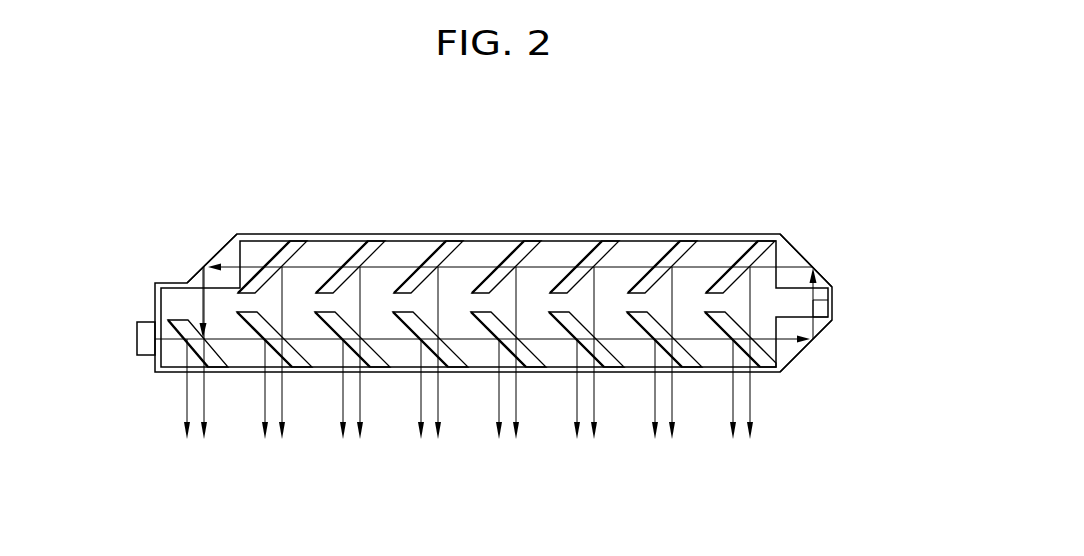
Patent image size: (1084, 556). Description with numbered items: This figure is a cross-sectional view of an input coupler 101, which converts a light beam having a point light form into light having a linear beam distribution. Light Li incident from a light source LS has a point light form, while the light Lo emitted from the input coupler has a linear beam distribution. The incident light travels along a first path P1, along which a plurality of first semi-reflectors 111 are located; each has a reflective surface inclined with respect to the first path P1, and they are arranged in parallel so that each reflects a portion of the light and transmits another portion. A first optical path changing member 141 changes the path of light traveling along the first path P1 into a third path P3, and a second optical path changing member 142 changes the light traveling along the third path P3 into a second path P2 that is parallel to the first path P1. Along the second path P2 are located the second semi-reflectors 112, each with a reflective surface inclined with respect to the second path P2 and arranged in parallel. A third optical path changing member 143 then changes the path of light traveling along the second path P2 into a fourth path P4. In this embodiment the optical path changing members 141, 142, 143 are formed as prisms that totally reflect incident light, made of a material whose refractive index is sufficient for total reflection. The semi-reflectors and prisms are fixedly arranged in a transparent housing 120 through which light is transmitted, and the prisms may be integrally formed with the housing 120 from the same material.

The input coupler 101 is at (797, 150).
The housing 120 is at (412, 236).
The first semi-reflectors 111 is at (527, 358).
The second semi-reflectors 112 is at (595, 253).
The first optical path changing member 141 is at (792, 350).
The second optical path changing member 142 is at (788, 260).
The third optical path changing member 143 is at (223, 253).
The first path P1 is at (625, 341).
The second path P2 is at (707, 266).
The third path P3 is at (828, 303).
The fourth path P4 is at (203, 302).
The light source LS is at (137, 339).
The incident light Li is at (178, 342).
The emitted light Lo is at (468, 370).